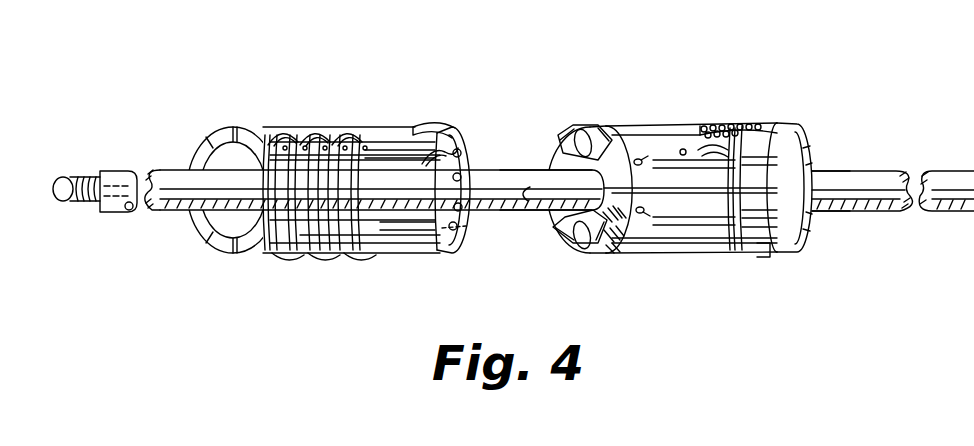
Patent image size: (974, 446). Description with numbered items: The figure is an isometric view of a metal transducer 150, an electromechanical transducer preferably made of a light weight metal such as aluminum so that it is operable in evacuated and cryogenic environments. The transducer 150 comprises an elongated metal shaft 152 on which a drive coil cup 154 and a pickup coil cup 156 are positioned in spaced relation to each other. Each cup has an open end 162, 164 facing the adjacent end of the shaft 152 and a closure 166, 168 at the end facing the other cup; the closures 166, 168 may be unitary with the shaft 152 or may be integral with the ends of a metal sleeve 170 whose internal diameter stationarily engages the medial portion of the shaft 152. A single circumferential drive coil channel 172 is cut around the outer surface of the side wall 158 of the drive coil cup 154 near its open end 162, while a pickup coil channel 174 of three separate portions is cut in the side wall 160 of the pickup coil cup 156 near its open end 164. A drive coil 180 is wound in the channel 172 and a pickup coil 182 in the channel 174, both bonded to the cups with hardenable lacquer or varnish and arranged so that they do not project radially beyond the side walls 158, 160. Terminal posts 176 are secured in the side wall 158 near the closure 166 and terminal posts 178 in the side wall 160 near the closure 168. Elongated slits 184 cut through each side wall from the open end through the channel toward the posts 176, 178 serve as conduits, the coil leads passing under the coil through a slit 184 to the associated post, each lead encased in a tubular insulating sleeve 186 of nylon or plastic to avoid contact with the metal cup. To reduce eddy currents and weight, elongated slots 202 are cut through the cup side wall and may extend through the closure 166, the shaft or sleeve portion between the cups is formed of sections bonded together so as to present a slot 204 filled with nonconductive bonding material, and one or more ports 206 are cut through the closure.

The metal transducer 150 is at (491, 238).
The elongated metal shaft 152 is at (885, 171).
The drive coil cup 154 is at (550, 148).
The pickup coil cup 156 is at (335, 140).
The side wall of drive coil cup 158 is at (690, 255).
The side wall of pickup coil cup 160 is at (372, 252).
The open end of drive coil cup 162 is at (802, 232).
The open end of pickup coil cup 164 is at (200, 146).
The closure of drive coil cup 166 is at (563, 138).
The closure of pickup coil cup 168 is at (438, 132).
The metal sleeve 170 is at (508, 232).
The drive coil channel 172 is at (735, 262).
The pickup coil channel 174 is at (336, 252).
The terminal posts 176 is at (643, 216).
The terminal posts 178 is at (460, 165).
The drive coil 180 is at (742, 124).
The pickup coil 182 is at (272, 130).
The elongated slits 184 is at (688, 152).
The tubular insulating sleeve 186 is at (722, 150).
The elongated slots 202 is at (682, 138).
The slot 204 is at (545, 203).
The ports 206 is at (582, 242).